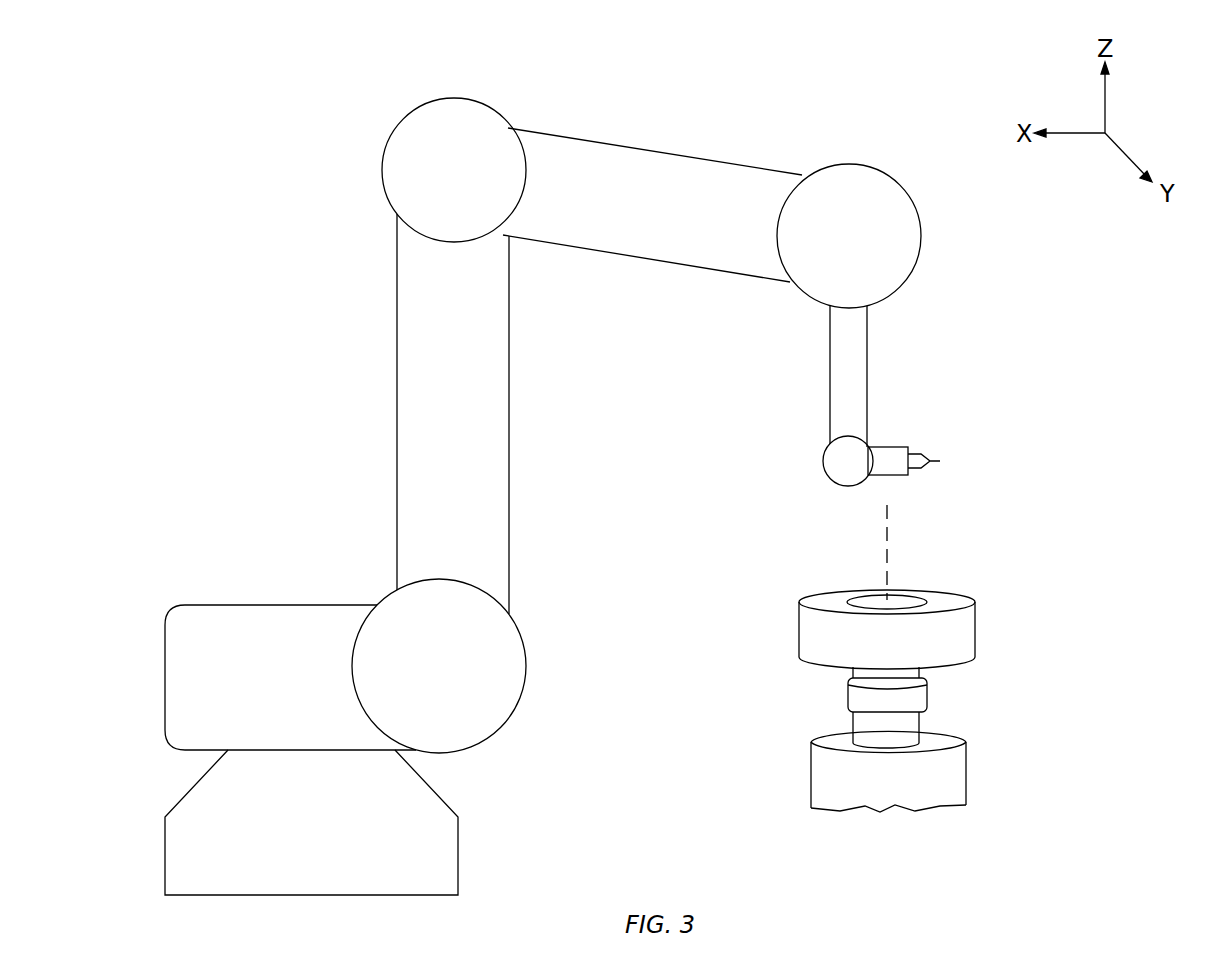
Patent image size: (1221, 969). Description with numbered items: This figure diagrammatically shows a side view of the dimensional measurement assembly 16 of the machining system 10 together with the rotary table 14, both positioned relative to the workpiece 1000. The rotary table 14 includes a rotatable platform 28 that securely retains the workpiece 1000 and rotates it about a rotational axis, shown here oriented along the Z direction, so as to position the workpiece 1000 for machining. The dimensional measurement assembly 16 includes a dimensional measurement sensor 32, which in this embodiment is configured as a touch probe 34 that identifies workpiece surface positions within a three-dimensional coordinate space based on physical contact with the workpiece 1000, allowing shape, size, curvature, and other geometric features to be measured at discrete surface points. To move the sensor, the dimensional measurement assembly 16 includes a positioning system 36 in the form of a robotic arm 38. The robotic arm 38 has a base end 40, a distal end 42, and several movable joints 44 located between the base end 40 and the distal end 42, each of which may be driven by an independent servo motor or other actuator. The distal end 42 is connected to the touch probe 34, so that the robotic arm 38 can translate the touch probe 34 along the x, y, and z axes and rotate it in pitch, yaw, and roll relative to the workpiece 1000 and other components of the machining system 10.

The machining system 10 is at (882, 84).
The rotary table 14 is at (996, 742).
The dimensional measurement assembly 16 is at (350, 190).
The rotatable platform 28 is at (873, 680).
The dimensional measurement sensor 32 is at (910, 431).
The touch probe 34 is at (890, 478).
The positioning system 36 is at (536, 443).
The robotic arm 38 is at (427, 313).
The base end 40 is at (552, 663).
The distal end 42 is at (804, 462).
The movable joint 44 is at (397, 455).
The workpiece 1000 is at (977, 630).